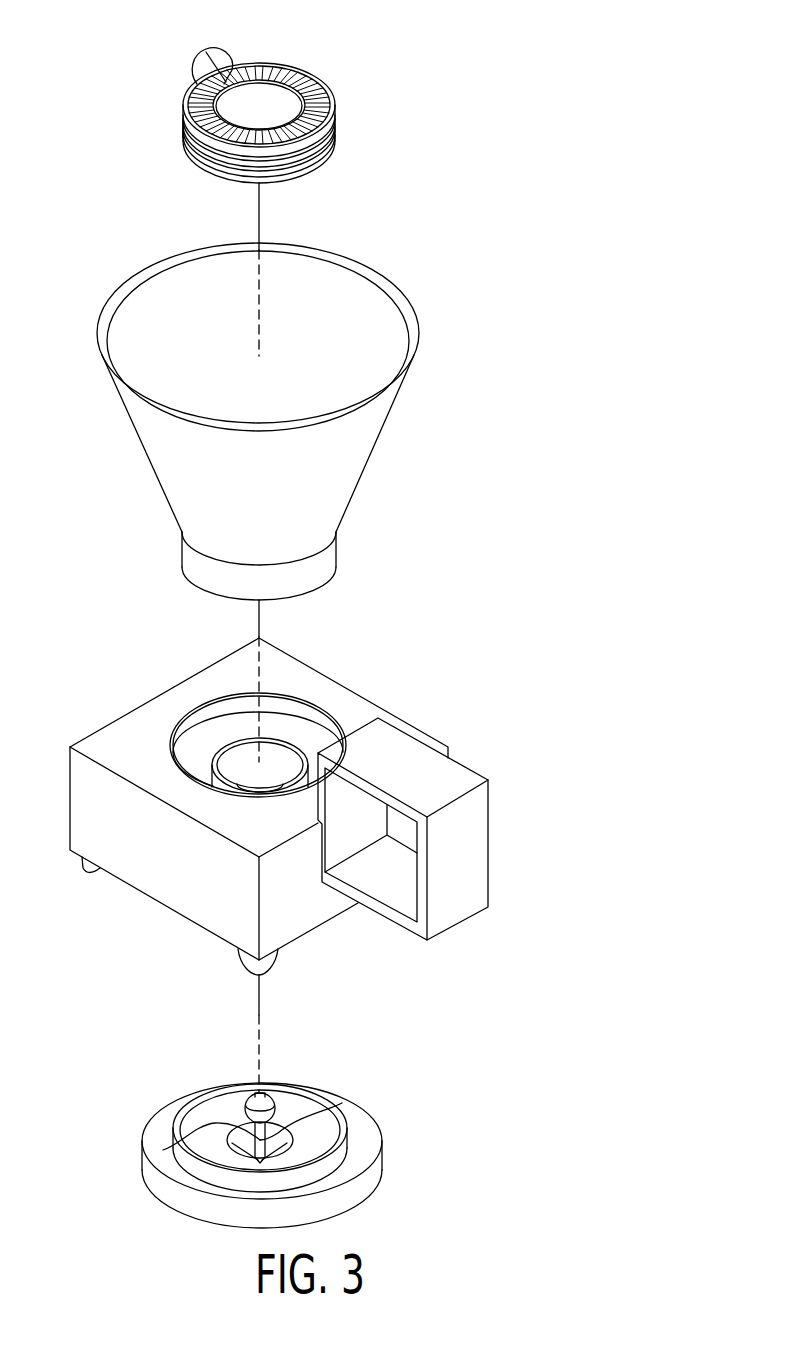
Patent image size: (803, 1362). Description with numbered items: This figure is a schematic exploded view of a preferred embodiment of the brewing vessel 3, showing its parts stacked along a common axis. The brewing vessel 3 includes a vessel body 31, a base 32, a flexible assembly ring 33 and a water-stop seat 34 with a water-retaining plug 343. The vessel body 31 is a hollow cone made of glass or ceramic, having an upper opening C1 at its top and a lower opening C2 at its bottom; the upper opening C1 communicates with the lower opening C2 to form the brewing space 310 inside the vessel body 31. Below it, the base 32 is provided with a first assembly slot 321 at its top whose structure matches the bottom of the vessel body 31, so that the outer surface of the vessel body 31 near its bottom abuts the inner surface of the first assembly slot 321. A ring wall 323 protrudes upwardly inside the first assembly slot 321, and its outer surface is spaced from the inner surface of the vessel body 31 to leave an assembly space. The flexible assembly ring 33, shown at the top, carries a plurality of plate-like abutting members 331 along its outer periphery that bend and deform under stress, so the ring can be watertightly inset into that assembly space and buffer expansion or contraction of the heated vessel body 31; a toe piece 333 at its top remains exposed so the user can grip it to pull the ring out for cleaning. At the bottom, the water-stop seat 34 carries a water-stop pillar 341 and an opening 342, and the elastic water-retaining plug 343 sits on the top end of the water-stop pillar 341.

The brewing vessel 3 is at (582, 149).
The flexible assembly ring 33 is at (362, 113).
The toe piece 333 is at (210, 62).
The abutting members 331 is at (188, 127).
The vessel body 31 is at (462, 315).
The brewing space 310 is at (144, 305).
The upper opening C1 is at (382, 280).
The lower opening C2 is at (327, 580).
The base 32 is at (469, 679).
The first assembly slot 321 is at (313, 690).
The ring wall 323 is at (237, 766).
The water-stop seat 34 is at (406, 1090).
The water-stop pillar 341 is at (163, 1150).
The opening 342 is at (342, 1103).
The water-retaining plug 343 is at (245, 1110).